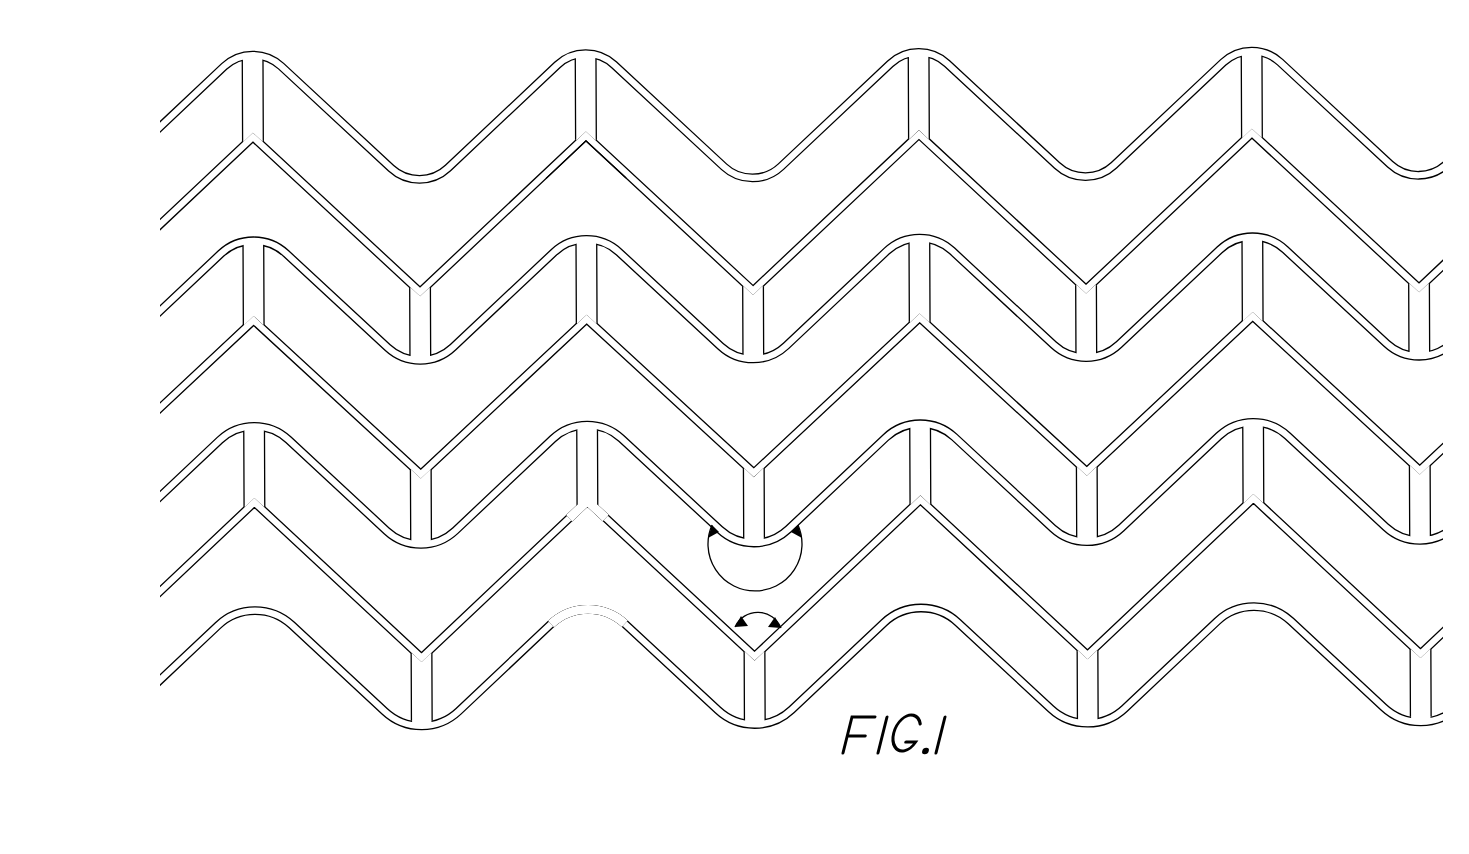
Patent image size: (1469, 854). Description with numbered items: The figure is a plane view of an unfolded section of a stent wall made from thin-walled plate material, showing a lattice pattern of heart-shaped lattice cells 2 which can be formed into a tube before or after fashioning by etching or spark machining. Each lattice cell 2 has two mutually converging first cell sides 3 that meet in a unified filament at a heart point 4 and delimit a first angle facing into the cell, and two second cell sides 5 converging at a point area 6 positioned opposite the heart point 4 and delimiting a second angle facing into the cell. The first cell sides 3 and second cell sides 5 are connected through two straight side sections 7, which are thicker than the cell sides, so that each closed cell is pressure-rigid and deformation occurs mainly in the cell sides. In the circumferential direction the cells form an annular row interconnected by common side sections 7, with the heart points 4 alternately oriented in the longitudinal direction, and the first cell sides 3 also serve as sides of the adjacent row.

The lattice cell 2 is at (592, 208).
The first cell side 3 is at (503, 590).
The heart point 4 is at (588, 511).
The second cell side 5 is at (694, 497).
The point area 6 is at (588, 604).
The side section 7 is at (766, 505).